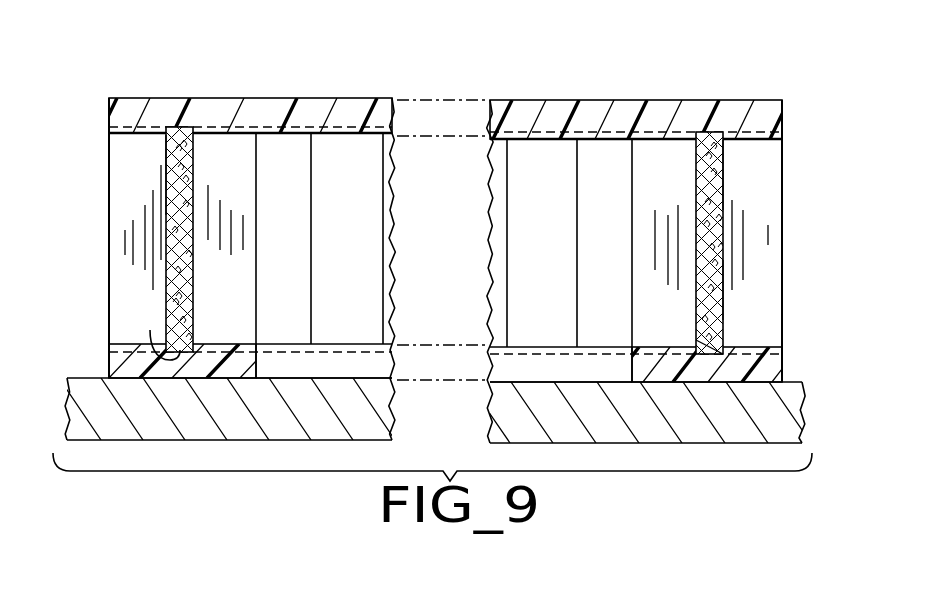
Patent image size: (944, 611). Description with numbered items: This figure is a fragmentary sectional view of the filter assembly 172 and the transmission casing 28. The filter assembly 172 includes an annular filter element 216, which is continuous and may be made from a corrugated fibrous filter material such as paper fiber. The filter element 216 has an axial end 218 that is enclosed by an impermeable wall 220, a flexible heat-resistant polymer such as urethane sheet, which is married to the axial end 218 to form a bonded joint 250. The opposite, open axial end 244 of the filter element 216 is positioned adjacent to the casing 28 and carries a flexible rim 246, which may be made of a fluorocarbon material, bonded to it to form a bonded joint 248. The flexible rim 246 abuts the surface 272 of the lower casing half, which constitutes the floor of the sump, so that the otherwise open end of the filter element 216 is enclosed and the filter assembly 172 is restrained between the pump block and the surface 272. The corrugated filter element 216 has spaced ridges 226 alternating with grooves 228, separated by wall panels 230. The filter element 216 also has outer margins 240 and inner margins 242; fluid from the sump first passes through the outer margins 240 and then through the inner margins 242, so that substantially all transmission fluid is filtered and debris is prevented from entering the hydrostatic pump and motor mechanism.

The transmission casing 28 is at (85, 380).
The filter assembly 172 is at (714, 84).
The filter element 216 is at (170, 200).
The axial end 218 is at (167, 155).
The impermeable wall 220 is at (682, 108).
The ridges 226 is at (820, 252).
The grooves 228 is at (633, 212).
The wall panels 230 is at (648, 295).
The outer margins 240 is at (165, 243).
The inner margins 242 is at (193, 222).
The axial end 244 is at (723, 302).
The flexible rim 246 is at (820, 344).
The bonded joint 248 is at (150, 345).
The bonded joint 250 is at (178, 128).
The surface 272 is at (263, 378).